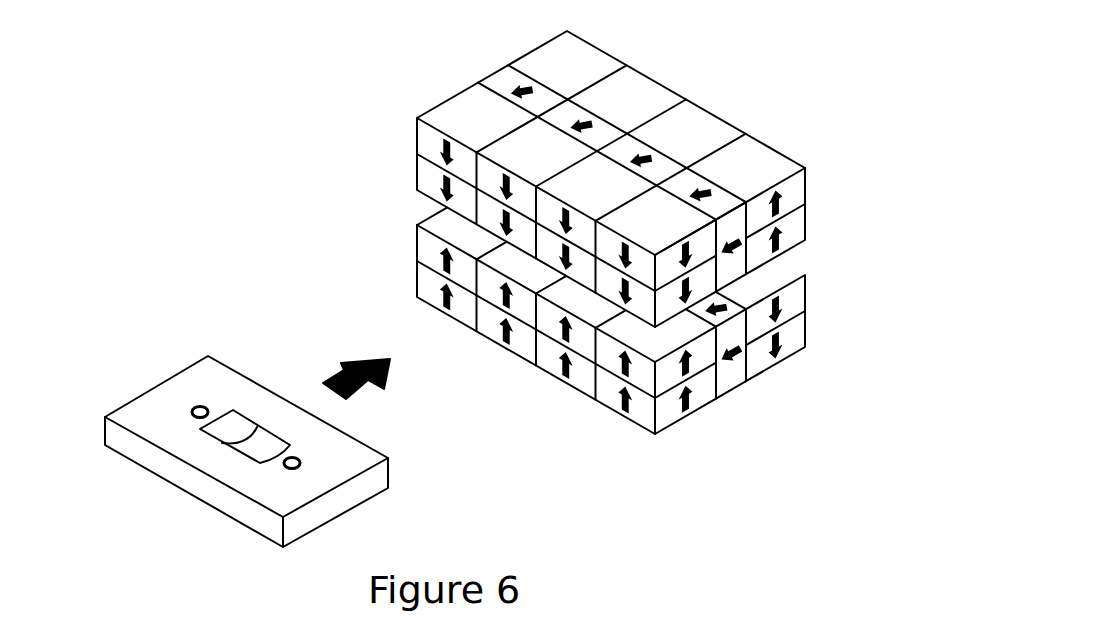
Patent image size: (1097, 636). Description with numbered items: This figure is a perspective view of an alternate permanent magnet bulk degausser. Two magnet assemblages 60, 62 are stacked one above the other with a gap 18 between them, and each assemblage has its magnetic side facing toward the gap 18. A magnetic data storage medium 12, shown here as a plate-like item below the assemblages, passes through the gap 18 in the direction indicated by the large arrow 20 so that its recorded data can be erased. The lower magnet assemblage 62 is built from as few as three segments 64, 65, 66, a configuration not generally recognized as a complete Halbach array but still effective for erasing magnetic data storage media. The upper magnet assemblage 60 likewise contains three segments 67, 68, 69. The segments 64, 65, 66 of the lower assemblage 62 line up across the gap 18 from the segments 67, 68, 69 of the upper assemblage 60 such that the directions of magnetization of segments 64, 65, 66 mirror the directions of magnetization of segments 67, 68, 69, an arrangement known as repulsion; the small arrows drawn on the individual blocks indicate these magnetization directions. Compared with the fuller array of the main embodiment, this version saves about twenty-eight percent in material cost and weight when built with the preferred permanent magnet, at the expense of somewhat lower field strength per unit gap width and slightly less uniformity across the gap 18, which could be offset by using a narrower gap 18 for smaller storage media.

The magnetic data storage medium 12 is at (168, 408).
The direction of movement arrow 20 is at (327, 378).
The gap 18 is at (668, 252).
The magnet assemblage 60 is at (668, 163).
The magnet assemblage 62 is at (691, 356).
The segment 64 is at (687, 412).
The segment 65 is at (730, 391).
The segment 66 is at (778, 364).
The segment 67 is at (446, 102).
The segment 68 is at (493, 71).
The segment 69 is at (531, 50).